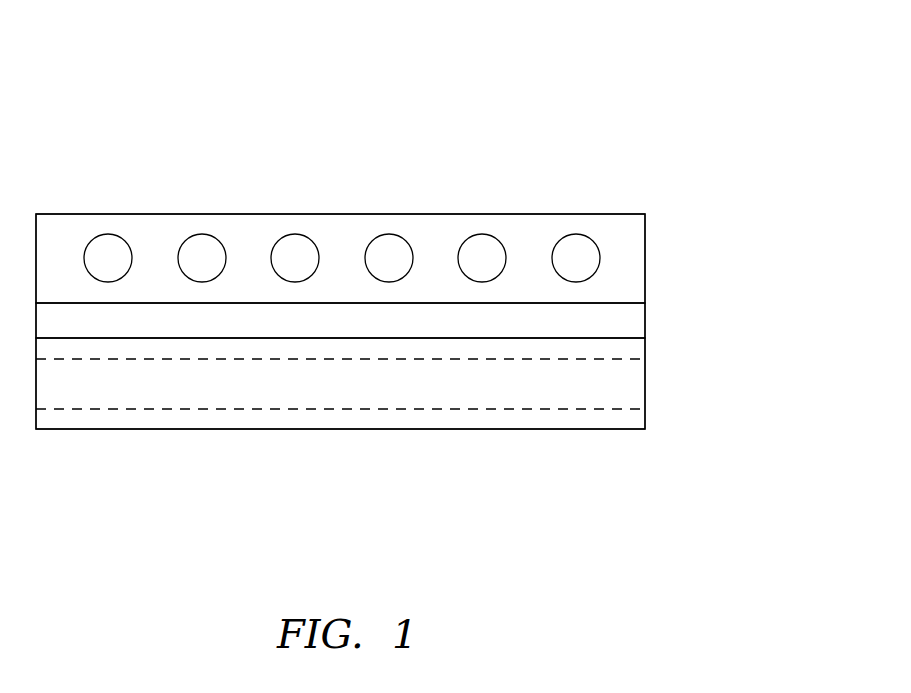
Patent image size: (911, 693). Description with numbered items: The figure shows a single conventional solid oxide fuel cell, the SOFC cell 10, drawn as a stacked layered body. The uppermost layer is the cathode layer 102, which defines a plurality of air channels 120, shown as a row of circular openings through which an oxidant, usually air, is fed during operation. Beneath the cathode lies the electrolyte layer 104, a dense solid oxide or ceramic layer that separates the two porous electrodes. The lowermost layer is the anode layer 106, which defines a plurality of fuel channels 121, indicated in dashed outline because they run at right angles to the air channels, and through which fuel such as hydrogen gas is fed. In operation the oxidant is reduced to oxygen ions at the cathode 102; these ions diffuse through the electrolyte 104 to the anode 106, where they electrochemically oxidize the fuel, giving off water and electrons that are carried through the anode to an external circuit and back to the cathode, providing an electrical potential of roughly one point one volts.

The SOFC cell 10 is at (523, 78).
The cathode layer 102 is at (637, 263).
The electrolyte layer 104 is at (637, 320).
The anode layer 106 is at (637, 387).
The air channels 120 is at (203, 247).
The fuel channels 121 is at (360, 394).